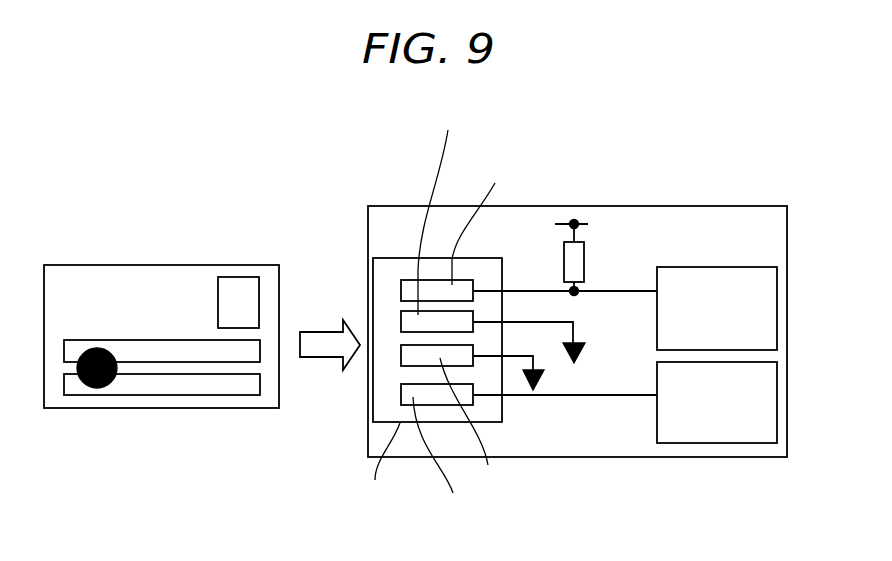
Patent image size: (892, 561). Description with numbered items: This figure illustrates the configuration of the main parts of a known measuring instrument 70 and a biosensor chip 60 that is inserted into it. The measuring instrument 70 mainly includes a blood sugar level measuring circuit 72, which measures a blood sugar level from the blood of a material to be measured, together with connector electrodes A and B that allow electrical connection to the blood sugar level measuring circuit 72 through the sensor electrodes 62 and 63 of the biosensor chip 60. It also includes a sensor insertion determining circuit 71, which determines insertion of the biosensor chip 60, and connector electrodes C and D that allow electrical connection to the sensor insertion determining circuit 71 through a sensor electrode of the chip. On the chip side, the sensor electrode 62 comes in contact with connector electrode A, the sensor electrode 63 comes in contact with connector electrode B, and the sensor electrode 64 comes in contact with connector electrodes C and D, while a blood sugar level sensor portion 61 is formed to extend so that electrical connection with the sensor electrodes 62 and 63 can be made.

The biosensor chip 60 is at (88, 250).
The blood sugar level sensor portion 61 is at (97, 388).
The sensor electrode 62 is at (190, 390).
The sensor electrode 63 is at (156, 347).
The sensor electrode 64 is at (238, 293).
The measuring instrument 70 is at (636, 197).
The sensor insertion determining circuit 71 is at (778, 294).
The blood sugar level measuring circuit 72 is at (778, 394).